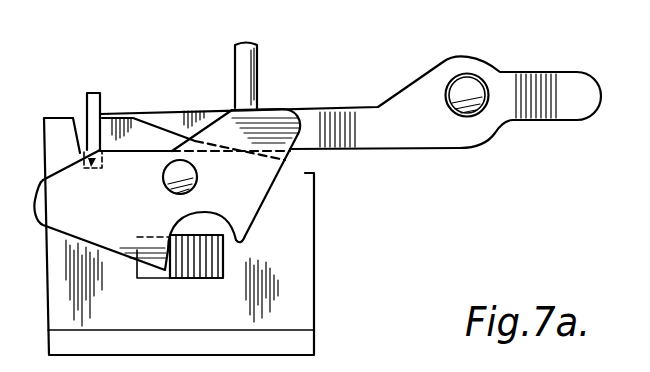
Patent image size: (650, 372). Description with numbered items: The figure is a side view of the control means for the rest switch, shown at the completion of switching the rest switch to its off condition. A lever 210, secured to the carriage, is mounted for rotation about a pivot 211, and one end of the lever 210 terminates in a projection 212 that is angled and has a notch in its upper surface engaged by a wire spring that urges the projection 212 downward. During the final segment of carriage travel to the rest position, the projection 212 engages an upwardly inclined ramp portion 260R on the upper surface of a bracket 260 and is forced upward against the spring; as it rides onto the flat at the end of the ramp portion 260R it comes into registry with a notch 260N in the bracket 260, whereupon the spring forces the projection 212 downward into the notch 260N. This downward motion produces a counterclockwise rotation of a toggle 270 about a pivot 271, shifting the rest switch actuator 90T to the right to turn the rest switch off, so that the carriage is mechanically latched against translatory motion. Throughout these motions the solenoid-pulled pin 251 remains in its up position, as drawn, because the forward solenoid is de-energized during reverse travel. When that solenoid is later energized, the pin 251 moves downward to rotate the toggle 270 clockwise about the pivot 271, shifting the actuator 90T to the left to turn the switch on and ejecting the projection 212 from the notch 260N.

The lever 210 is at (458, 148).
The pivot 211 is at (493, 70).
The projection 212 is at (87, 117).
The pin 251 is at (257, 72).
The bracket 260 is at (315, 295).
The notch 260N is at (91, 168).
The ramp portion 260R is at (295, 162).
The toggle 270 is at (257, 220).
The pivot 271 is at (197, 180).
The rest switch actuator 90T is at (202, 279).